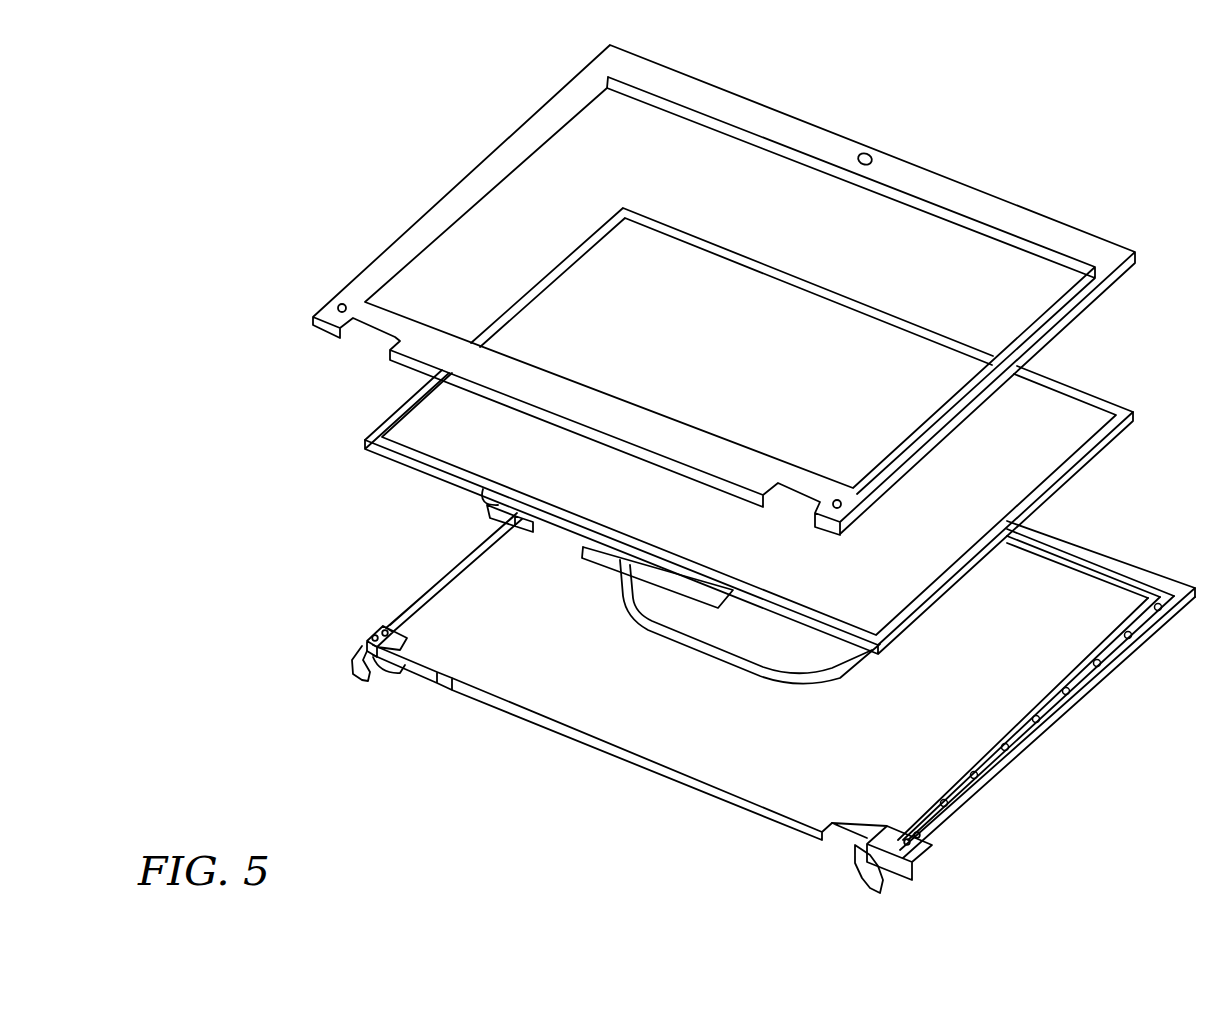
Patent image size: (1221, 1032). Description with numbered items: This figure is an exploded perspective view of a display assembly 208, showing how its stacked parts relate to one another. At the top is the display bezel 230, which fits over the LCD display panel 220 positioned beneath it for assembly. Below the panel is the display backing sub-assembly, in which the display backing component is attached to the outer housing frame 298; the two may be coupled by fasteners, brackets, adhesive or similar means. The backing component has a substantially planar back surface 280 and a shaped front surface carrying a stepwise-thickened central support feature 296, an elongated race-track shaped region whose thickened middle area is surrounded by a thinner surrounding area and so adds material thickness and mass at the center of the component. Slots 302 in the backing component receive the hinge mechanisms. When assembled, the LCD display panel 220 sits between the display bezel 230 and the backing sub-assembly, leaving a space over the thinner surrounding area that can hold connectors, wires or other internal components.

The display assembly 208 is at (813, 107).
The display bezel 230 is at (983, 203).
The LCD display panel 220 is at (1055, 400).
The back surface 280 is at (1075, 593).
The outer housing frame 298 is at (1005, 755).
The slots 302 is at (440, 685).
The stepwise-thickened central support feature 296 is at (700, 632).